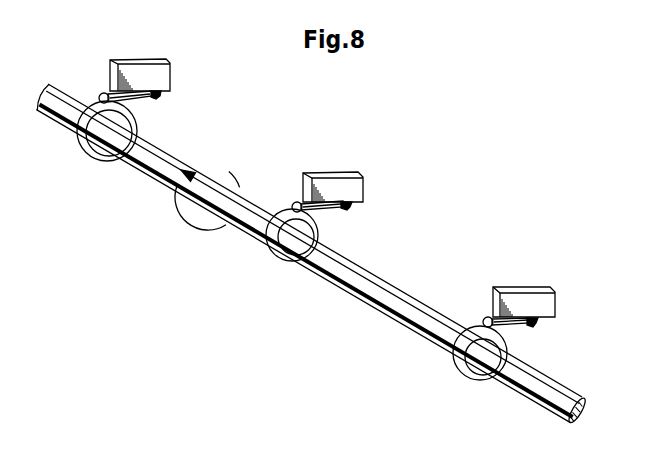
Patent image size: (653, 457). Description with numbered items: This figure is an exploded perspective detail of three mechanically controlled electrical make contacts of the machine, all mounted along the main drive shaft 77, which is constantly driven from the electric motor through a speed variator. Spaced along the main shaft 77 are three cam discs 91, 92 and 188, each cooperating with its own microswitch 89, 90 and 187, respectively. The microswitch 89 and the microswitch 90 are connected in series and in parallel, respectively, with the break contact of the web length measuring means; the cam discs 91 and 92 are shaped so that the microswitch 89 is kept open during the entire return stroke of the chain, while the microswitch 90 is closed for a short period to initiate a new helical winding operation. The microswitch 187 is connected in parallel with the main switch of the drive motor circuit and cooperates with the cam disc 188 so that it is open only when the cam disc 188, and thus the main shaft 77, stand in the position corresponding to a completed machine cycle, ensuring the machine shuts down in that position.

The main drive shaft 77 is at (74, 92).
The microswitch 89 is at (132, 72).
The microswitch 90 is at (318, 182).
The cam disc 91 is at (130, 125).
The cam disc 92 is at (317, 232).
The microswitch 187 is at (517, 297).
The cam disc 188 is at (470, 327).